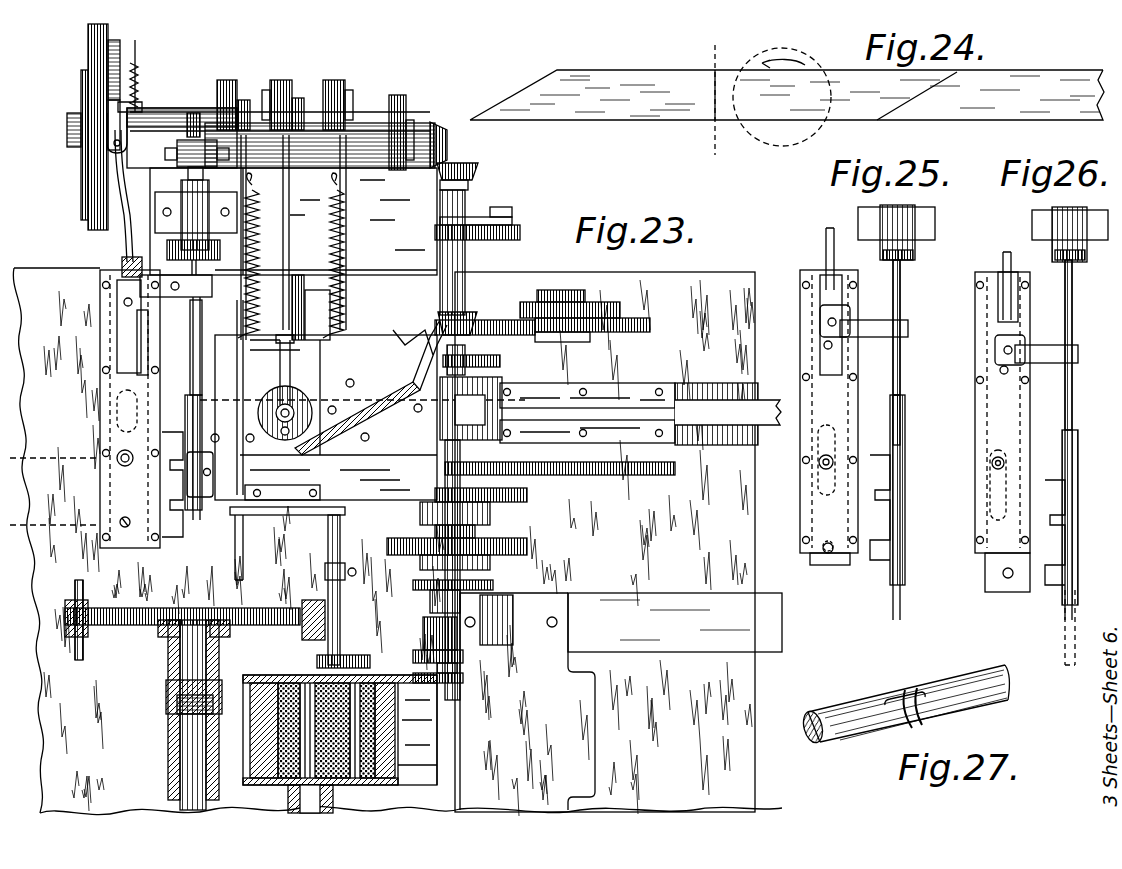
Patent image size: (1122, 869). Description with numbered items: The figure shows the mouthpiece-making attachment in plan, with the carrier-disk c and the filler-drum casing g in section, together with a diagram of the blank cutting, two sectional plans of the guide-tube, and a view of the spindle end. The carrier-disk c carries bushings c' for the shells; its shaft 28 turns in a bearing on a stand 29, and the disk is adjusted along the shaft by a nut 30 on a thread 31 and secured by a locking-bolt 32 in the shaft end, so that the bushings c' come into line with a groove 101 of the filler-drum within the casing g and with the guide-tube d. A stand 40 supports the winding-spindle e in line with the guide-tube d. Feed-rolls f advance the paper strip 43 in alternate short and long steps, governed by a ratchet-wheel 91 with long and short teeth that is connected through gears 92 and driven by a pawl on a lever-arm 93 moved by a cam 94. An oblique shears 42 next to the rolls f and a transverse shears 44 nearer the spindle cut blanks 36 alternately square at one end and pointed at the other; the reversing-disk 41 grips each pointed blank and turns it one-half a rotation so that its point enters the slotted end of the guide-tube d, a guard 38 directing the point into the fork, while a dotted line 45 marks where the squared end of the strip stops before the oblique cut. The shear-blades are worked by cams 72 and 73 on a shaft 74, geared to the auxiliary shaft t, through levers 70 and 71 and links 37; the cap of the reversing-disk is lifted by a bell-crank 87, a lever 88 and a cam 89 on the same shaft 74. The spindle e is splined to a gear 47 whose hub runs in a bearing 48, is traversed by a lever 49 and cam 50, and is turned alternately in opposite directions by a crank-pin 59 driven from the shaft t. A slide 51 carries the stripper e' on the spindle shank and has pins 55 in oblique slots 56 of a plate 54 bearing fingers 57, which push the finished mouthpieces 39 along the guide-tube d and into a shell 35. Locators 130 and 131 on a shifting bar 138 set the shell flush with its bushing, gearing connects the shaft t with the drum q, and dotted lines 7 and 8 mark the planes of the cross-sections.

In FIG. 23, the section line 7 is at (50, 456).
In FIG. 23, the section line 8 is at (50, 523).
In FIG. 23, the shaft 28 is at (190, 752).
In FIG. 23, the stand 29 is at (168, 728).
In FIG. 23, the nut 30 is at (166, 682).
In FIG. 23, the thread 31 is at (177, 703).
In FIG. 23, the locking-bolt 32 is at (212, 630).
In FIG. 26, the shell 35 is at (1065, 627).
In FIG. 24, the blanks 36 is at (583, 120).
In FIG. 23, the link 37 is at (248, 222).
In FIG. 23, the guard 38 is at (240, 410).
In FIG. 25, the mouthpieces 39 is at (905, 413).
In FIG. 27, the mouthpieces 39 is at (955, 670).
In FIG. 23, the stand 40 is at (605, 542).
In FIG. 23, the reversing-disk 41 is at (283, 395).
In FIG. 24, the reversing-disk 41 is at (781, 146).
In FIG. 23, the oblique shears 42 is at (390, 395).
In FIG. 23, the paper strip 43 is at (640, 414).
In FIG. 24, the paper strip 43 is at (949, 96).
In FIG. 23, the transverse shears 44 is at (330, 395).
In FIG. 24, the dotted line 45 is at (714, 98).
In FIG. 23, the gear 47 is at (168, 251).
In FIG. 23, the bearing 48 is at (188, 200).
In FIG. 25, the bearing 48 is at (915, 247).
In FIG. 23, the lever 49 is at (81, 88).
In FIG. 23, the cam 50 is at (88, 33).
In FIG. 23, the slide 51 is at (122, 265).
In FIG. 25, the slide 51 is at (814, 292).
In FIG. 26, the slide 51 is at (985, 335).
In FIG. 23, the plate 54 is at (135, 548).
In FIG. 25, the plate 54 is at (866, 448).
In FIG. 26, the plate 54 is at (1010, 580).
In FIG. 23, the pins 55 is at (126, 516).
In FIG. 23, the oblique slots 56 is at (122, 320).
In FIG. 25, the oblique slots 56 is at (832, 556).
In FIG. 23, the fingers 57 is at (170, 540).
In FIG. 26, the fingers 57 is at (1058, 580).
In FIG. 23, the crank-pin 59 is at (512, 210).
In FIG. 23, the lever 70 is at (390, 104).
In FIG. 23, the lever 71 is at (255, 111).
In FIG. 23, the cam 72 is at (323, 100).
In FIG. 23, the cam 73 is at (224, 122).
In FIG. 23, the shaft 74 is at (448, 146).
In FIG. 23, the bell-crank 87 is at (297, 370).
In FIG. 23, the lever 88 is at (278, 80).
In FIG. 23, the cam 89 is at (308, 112).
In FIG. 23, the ratchet-wheel 91 is at (602, 332).
In FIG. 23, the gears 92 is at (650, 325).
In FIG. 23, the lever-arm 93 is at (562, 290).
In FIG. 23, the cam 94 is at (615, 318).
In FIG. 23, the longitudinal grooves 101 is at (332, 799).
In FIG. 23, the locator 130 is at (243, 552).
In FIG. 23, the locator 131 is at (287, 532).
In FIG. 23, the shifting bar 138 is at (341, 607).
In FIG. 23, the carrier-disk c is at (172, 620).
In FIG. 23, the bushings c' is at (64, 620).
In FIG. 23, the guide-tube d is at (170, 575).
In FIG. 25, the guide-tube d is at (905, 494).
In FIG. 23, the winding-spindle e is at (181, 396).
In FIG. 25, the winding-spindle e is at (912, 440).
In FIG. 26, the winding-spindle e is at (1070, 413).
In FIG. 27, the winding-spindle e is at (834, 707).
In FIG. 23, the stripper e' is at (211, 347).
In FIG. 25, the stripper e' is at (915, 396).
In FIG. 23, the feed-rolls f is at (471, 408).
In FIG. 23, the filler-drum casing g is at (274, 675).
In FIG. 23, the drum q is at (382, 708).
In FIG. 23, the shaft t is at (470, 192).